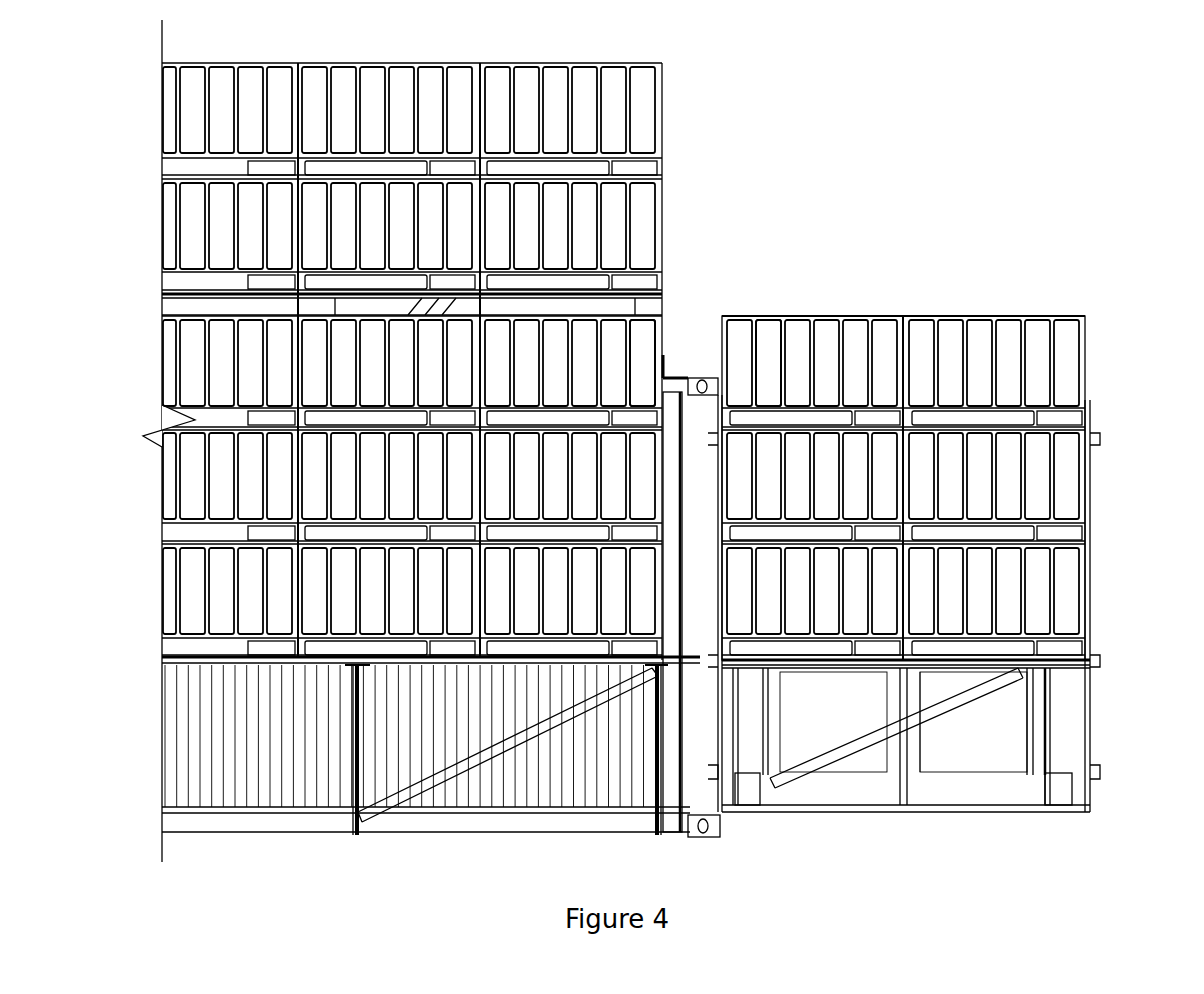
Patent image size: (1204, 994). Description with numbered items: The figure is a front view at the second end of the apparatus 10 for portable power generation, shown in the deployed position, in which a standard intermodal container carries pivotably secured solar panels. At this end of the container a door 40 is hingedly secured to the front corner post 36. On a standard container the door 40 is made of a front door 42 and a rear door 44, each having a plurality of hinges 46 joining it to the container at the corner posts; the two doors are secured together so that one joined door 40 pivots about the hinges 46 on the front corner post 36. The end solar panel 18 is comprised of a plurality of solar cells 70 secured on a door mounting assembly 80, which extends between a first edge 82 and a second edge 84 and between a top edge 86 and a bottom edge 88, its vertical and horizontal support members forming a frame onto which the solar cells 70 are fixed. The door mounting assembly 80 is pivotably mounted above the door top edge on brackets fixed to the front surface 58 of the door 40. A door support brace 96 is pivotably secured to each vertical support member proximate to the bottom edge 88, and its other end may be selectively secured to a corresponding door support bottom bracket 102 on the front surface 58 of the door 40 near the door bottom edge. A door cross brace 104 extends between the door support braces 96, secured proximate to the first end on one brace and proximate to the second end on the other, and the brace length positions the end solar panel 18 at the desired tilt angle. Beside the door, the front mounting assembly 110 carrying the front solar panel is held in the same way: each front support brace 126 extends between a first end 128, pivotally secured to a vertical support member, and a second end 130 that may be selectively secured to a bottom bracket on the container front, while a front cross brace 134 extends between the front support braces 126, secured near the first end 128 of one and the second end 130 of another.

The apparatus for portable power generation 10 is at (998, 117).
The end solar panel 18 is at (911, 315).
The front corner post 36 is at (693, 425).
The door 40 is at (968, 790).
The front door 42 is at (824, 790).
The rear door 44 is at (923, 790).
The hinges 46 is at (708, 662).
The front surface 58 is at (1010, 750).
The solar cells 70 is at (623, 330).
The door mounting assembly 80 is at (1085, 645).
The first edge 82 is at (716, 343).
The second edge 84 is at (1090, 357).
The top edge 86 is at (1025, 312).
The bottom edge 88 is at (1058, 675).
The door support brace 96 is at (765, 742).
The door support bottom bracket 102 is at (771, 795).
The door cross brace 104 is at (867, 742).
The front mounting assembly 110 is at (505, 667).
The front support brace 126 is at (362, 738).
The first end 128 is at (658, 690).
The second end 130 is at (357, 842).
The front cross brace 134 is at (520, 740).